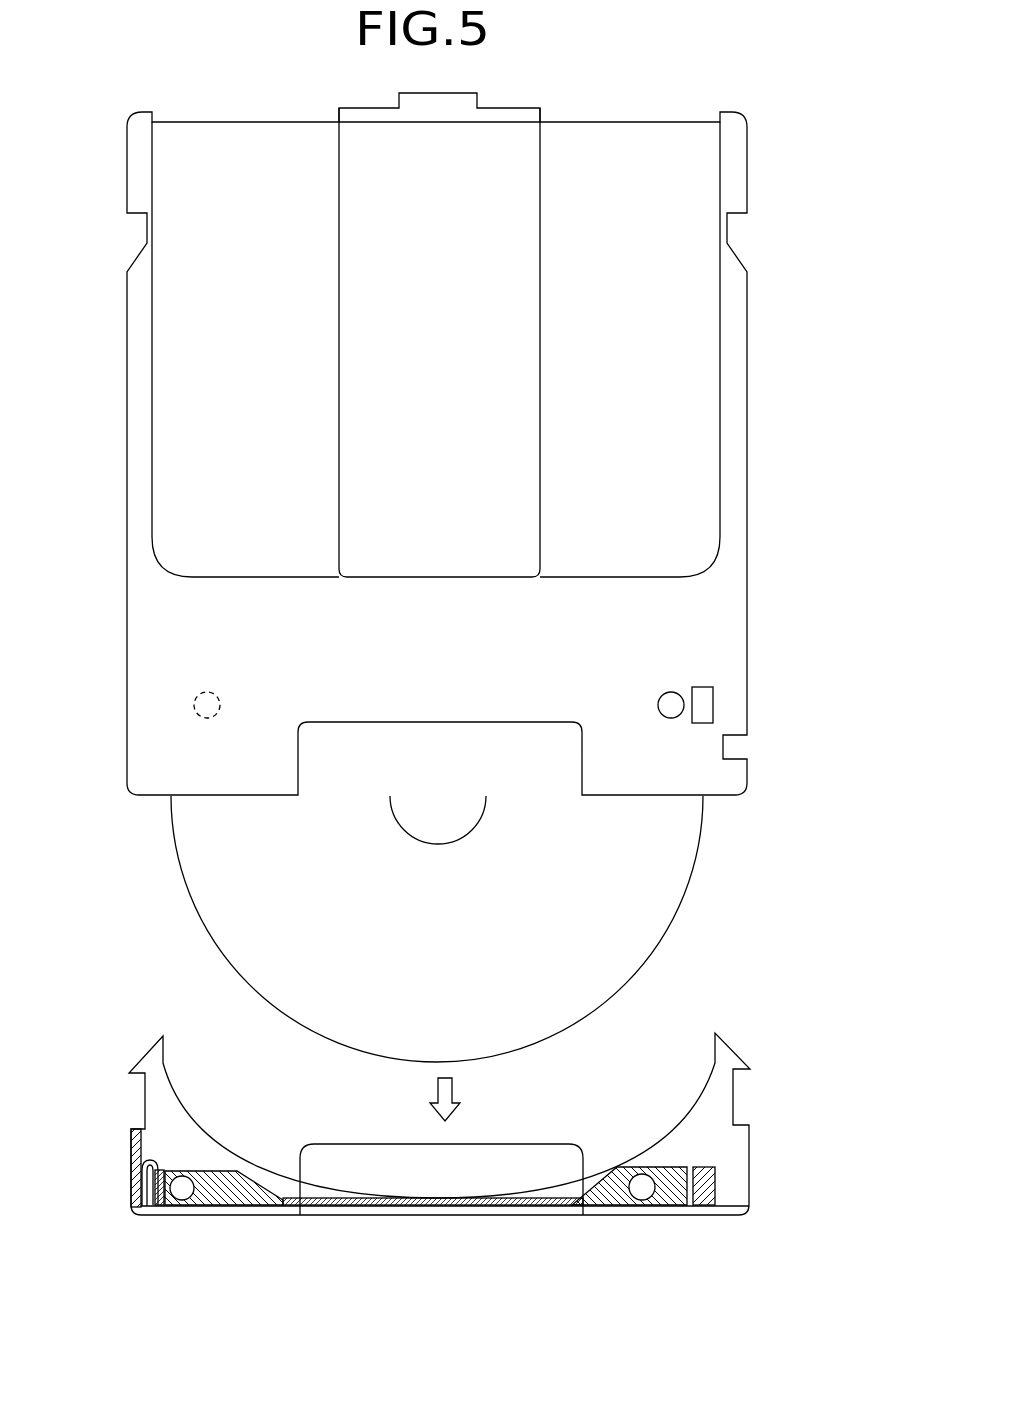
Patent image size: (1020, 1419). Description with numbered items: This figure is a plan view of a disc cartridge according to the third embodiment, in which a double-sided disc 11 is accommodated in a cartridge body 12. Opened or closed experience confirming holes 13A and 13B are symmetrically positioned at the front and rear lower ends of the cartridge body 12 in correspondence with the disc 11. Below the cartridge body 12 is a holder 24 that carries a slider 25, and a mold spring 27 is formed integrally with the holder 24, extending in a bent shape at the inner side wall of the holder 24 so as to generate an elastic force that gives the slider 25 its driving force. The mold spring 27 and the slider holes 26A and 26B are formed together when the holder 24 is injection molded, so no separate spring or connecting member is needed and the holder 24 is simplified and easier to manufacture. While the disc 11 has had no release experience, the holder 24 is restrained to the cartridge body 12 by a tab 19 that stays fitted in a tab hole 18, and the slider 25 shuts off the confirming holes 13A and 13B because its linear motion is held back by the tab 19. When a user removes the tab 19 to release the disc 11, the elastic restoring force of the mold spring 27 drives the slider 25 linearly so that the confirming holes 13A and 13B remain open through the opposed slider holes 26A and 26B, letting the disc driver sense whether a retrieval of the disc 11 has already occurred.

The double-sided disc 11 is at (663, 913).
The cartridge body 12 is at (746, 305).
The opened or closed experience confirming hole 13A is at (671, 705).
The opened or closed experience confirming hole 13B is at (205, 707).
The tab hole 18 is at (703, 705).
The tab 19 is at (717, 1197).
The holder 24 is at (749, 1135).
The slider 25 is at (602, 1200).
The slider hole 26A is at (655, 1195).
The slider hole 26B is at (190, 1195).
The mold spring 27 is at (145, 1213).